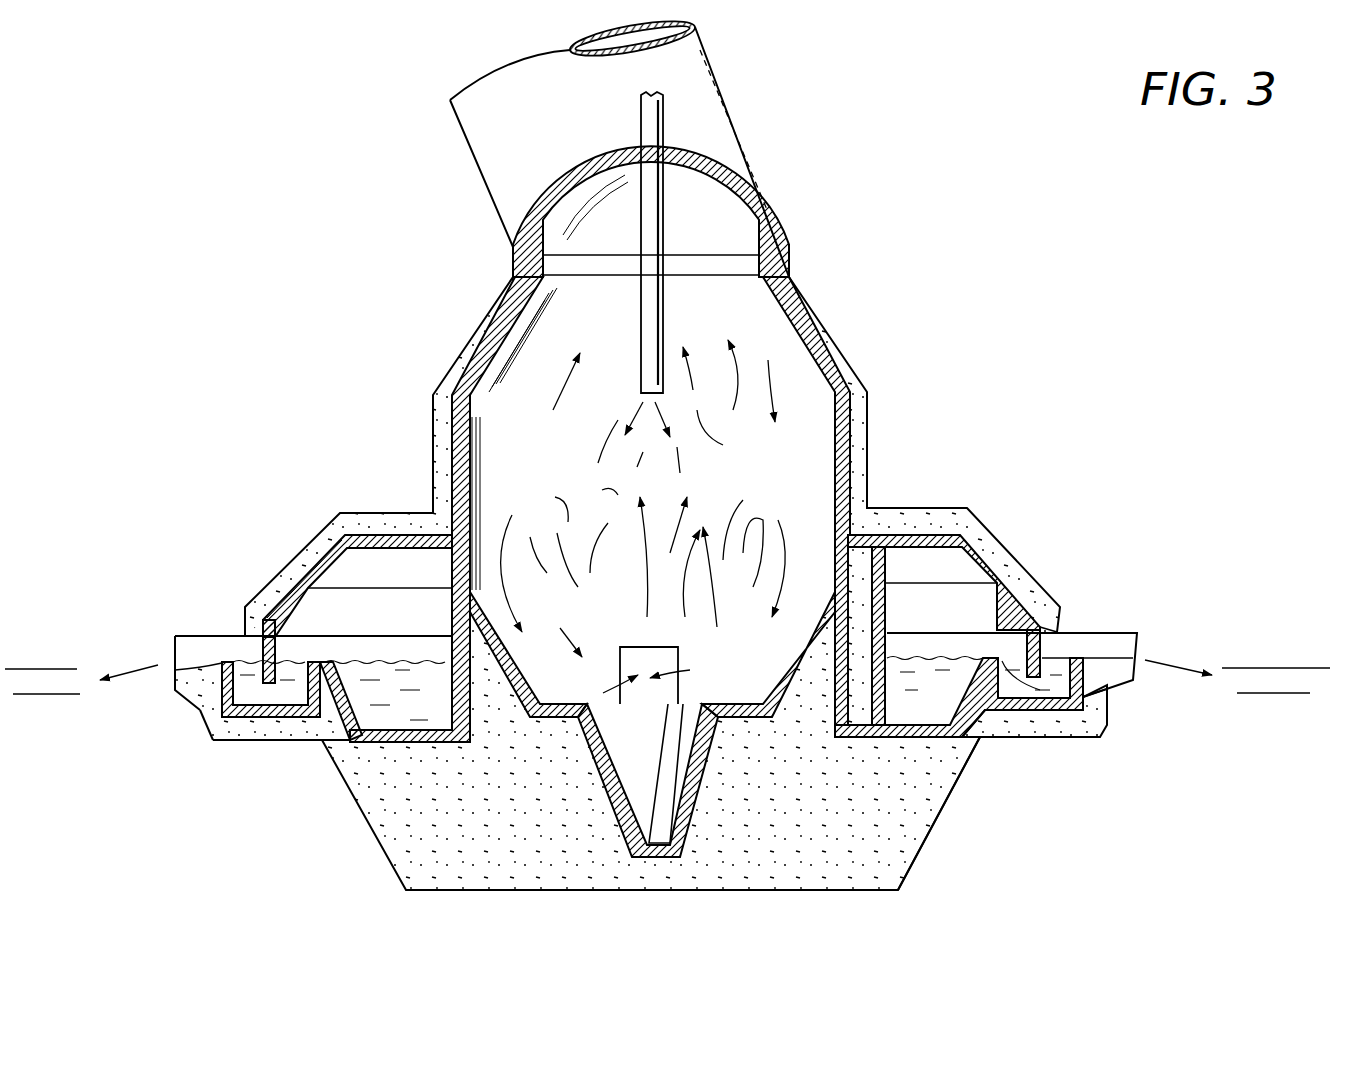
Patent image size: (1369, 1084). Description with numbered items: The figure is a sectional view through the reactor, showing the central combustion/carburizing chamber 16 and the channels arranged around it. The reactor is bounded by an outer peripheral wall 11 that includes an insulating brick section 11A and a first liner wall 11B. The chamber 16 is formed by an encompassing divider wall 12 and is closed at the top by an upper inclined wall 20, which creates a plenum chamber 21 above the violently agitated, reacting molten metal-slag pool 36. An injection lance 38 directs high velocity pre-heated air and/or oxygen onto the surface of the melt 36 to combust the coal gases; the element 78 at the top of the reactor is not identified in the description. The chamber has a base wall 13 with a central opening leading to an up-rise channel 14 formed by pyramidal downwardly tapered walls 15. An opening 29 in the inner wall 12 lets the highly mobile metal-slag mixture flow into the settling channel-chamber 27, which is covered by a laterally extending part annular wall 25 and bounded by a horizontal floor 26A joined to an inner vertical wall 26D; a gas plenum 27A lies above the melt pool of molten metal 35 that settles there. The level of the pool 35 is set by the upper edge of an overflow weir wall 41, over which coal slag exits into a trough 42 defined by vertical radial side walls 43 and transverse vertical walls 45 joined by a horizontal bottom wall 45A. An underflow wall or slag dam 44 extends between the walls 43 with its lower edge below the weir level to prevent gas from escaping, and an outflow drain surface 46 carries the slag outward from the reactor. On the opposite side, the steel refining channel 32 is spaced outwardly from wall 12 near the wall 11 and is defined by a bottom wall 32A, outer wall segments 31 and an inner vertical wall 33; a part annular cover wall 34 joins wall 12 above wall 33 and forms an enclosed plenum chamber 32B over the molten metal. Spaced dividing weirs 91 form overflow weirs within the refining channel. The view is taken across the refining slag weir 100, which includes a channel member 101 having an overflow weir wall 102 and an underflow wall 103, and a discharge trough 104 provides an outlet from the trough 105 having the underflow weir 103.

The feed duct 78 is at (718, 107).
The upper inclined wall 20 is at (795, 280).
The injection lance 38 is at (666, 318).
The plenum chamber portion 21 is at (550, 318).
The divider wall 12 is at (470, 423).
The molten metal-slag pool 36 is at (567, 518).
The combustion/carburizing chamber 16 is at (800, 378).
The outer peripheral wall 11 is at (860, 408).
The insulating brick section 11A is at (857, 448).
The first liner wall 11B is at (845, 480).
The cover wall 34 is at (943, 533).
The plenum chamber 32B is at (965, 566).
The steel refining channel chamber 32 is at (978, 596).
The refining slag weir 100 is at (1037, 560).
The dividing weirs 91 is at (1040, 585).
The inner vertical wall 33 is at (887, 605).
The underflow wall 103 is at (1040, 657).
The discharge trough 104 is at (1133, 633).
The overflow weir wall 102 is at (1083, 695).
The trough 105 is at (1040, 695).
The outer wall segments 31 is at (968, 713).
The bottom wall 32A is at (928, 740).
The channel member 101 is at (1042, 698).
The base wall 13 is at (556, 678).
The pyramidal downwardly tapered walls 15 is at (610, 782).
The up-rise channel 14 is at (683, 712).
The opening 29 is at (660, 655).
The inner vertical wall 26D is at (470, 705).
The floor 26A is at (385, 740).
The upper plenum portion 27A is at (390, 563).
The settling channel-chamber 27 is at (340, 635).
The overflow weir wall 41 is at (317, 662).
The vertical radial side walls 43 is at (182, 632).
The underflow wall 44 is at (263, 658).
The outflow drain surface 46 is at (197, 670).
The transverse vertical walls 45 is at (200, 690).
The trough 42 is at (215, 712).
The horizontal bottom wall 45A is at (233, 722).
The molten metal pool 35 is at (345, 740).
The part annular wall 25 is at (363, 533).